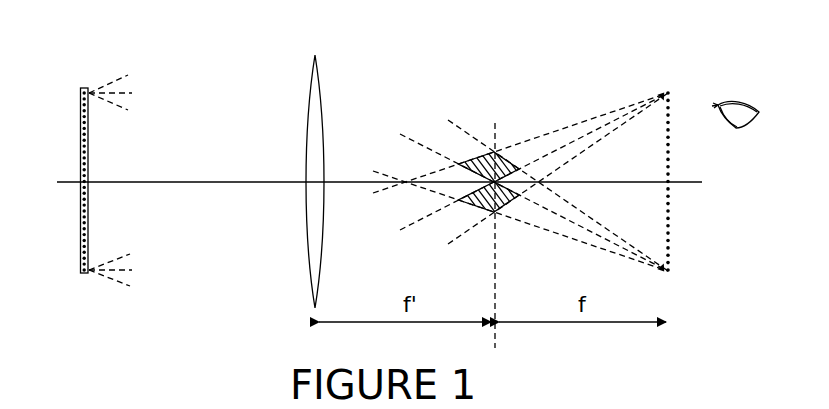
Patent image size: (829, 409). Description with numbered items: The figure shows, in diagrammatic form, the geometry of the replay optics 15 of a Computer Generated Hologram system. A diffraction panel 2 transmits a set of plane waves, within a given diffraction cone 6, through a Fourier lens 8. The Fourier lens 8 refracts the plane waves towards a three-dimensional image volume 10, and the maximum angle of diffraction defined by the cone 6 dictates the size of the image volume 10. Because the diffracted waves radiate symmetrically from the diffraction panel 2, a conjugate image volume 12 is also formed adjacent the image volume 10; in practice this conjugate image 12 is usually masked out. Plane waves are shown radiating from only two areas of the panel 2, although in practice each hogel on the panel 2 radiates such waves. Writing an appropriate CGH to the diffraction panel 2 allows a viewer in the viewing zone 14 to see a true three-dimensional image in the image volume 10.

The diffraction panel 2 is at (80, 232).
The diffraction cone 6 is at (124, 92).
The Fourier lens 8 is at (307, 247).
The three-dimensional image volume 10 is at (511, 162).
The conjugate image volume 12 is at (512, 203).
The viewing zone 14 is at (742, 98).
The replay optics 15 is at (205, 316).